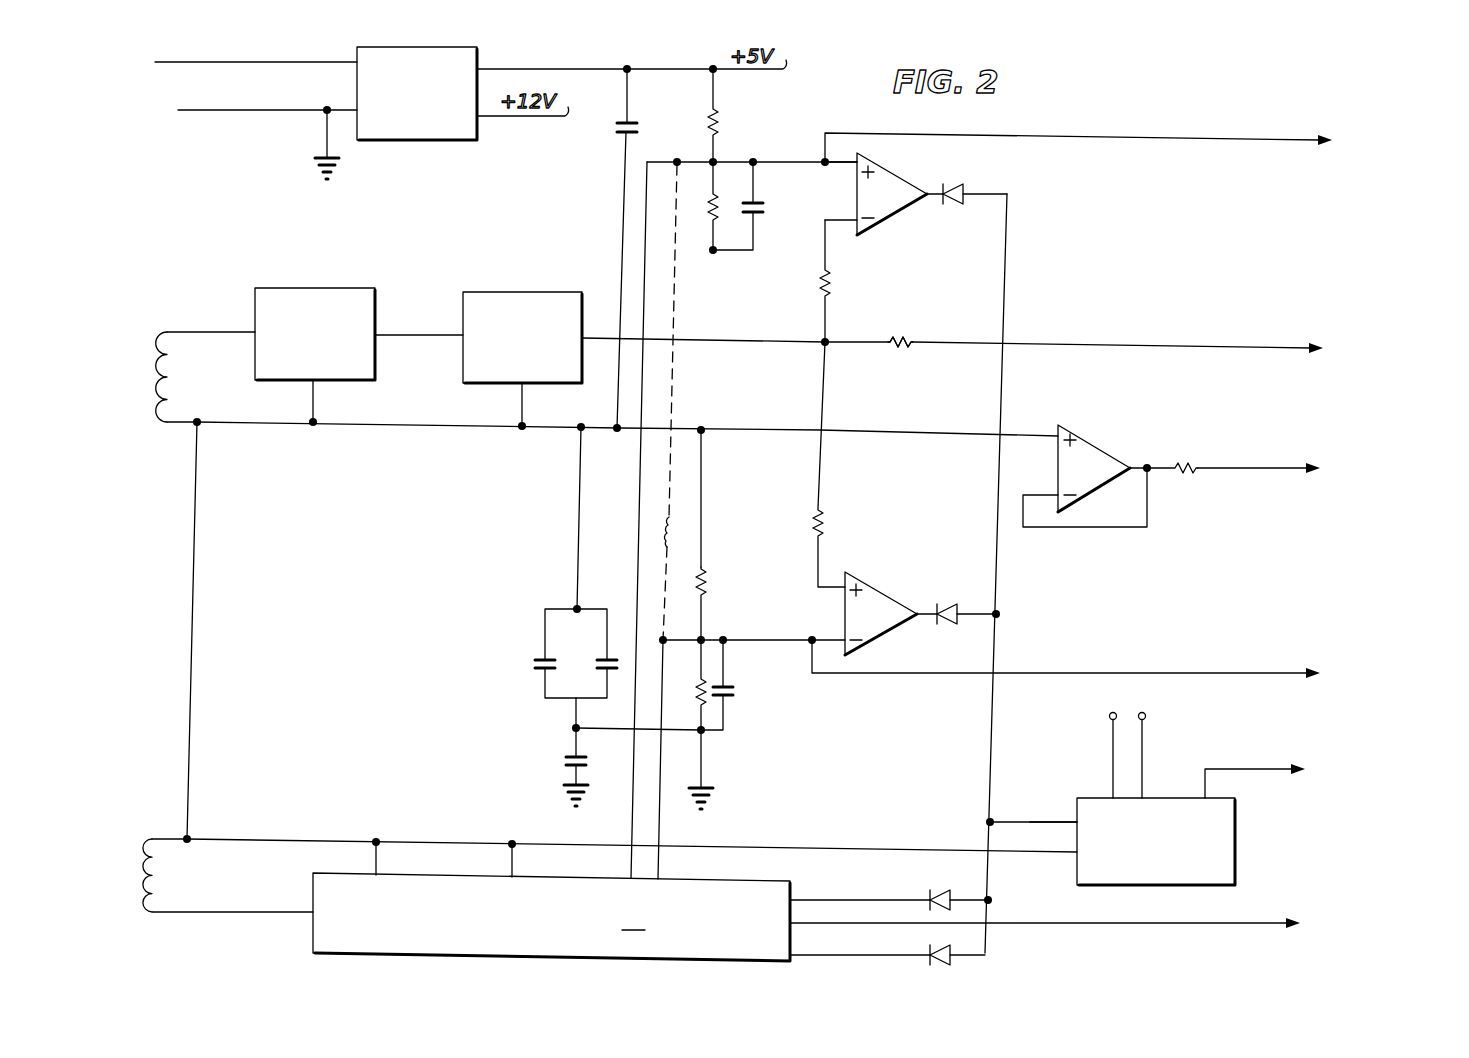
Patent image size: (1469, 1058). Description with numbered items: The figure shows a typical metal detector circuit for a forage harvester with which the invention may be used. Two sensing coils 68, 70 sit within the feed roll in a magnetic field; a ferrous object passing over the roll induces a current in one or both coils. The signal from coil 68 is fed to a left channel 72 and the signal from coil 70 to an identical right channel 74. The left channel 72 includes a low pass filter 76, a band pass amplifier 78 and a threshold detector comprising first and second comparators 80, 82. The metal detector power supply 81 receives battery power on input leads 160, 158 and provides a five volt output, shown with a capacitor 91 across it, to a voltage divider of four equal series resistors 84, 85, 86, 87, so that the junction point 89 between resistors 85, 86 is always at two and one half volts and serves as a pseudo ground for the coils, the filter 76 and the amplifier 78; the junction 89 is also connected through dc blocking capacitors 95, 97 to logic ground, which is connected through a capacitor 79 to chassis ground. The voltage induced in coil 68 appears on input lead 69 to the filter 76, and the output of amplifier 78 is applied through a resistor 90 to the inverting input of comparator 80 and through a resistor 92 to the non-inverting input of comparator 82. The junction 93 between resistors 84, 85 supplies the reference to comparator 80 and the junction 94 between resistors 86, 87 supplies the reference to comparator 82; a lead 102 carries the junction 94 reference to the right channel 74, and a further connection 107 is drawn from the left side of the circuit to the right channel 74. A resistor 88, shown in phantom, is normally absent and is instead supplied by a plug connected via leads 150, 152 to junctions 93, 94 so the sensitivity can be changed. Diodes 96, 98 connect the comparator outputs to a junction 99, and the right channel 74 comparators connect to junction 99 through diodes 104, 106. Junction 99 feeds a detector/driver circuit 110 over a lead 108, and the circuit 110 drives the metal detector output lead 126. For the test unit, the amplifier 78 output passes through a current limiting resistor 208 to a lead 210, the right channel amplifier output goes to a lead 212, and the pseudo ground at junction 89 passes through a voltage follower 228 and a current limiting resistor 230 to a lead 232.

The input lead 160 is at (240, 63).
The input lead 158 is at (237, 112).
The metal detector power supply 81 is at (426, 141).
The capacitor 91 is at (635, 120).
The resistor 84 is at (720, 112).
The junction 93 is at (722, 160).
The resistor 85 is at (718, 210).
The first comparator 80 is at (898, 183).
The diode 96 is at (968, 190).
The lead 150 is at (1186, 136).
The resistor 90 is at (832, 282).
The current limiting resistor 208 is at (905, 340).
The lead 210 is at (1178, 342).
The resistor 92 is at (825, 525).
The second comparator 82 is at (875, 593).
The diode 98 is at (948, 600).
The lead 152 is at (1228, 672).
The voltage follower 228 is at (1085, 438).
The current limiting resistor 230 is at (1195, 462).
The lead 232 is at (1278, 462).
The junction point 89 is at (705, 428).
The sensing coil 68 is at (170, 387).
The input lead 69 is at (212, 330).
The low pass filter 76 is at (329, 296).
The band pass amplifier 78 is at (493, 296).
The left channel 72 is at (377, 464).
The dc blocking capacitor 95 is at (536, 652).
The dc blocking capacitor 97 is at (604, 659).
The capacitor 79 is at (566, 763).
The resistor 88 is at (680, 528).
The lead 102 is at (703, 547).
The resistor 86 is at (706, 594).
The junction 94 is at (705, 638).
The resistor 87 is at (705, 678).
The sensing coil 70 is at (160, 886).
The conductor line 107 is at (839, 848).
The right channel 74 is at (551, 917).
The detector/driver circuit 110 is at (1222, 833).
The metal detector output lead 126 is at (1276, 767).
The junction 99 is at (987, 822).
The lead 108 is at (1048, 820).
The diode 104 is at (936, 890).
The lead 212 is at (1218, 923).
The diode 106 is at (930, 950).